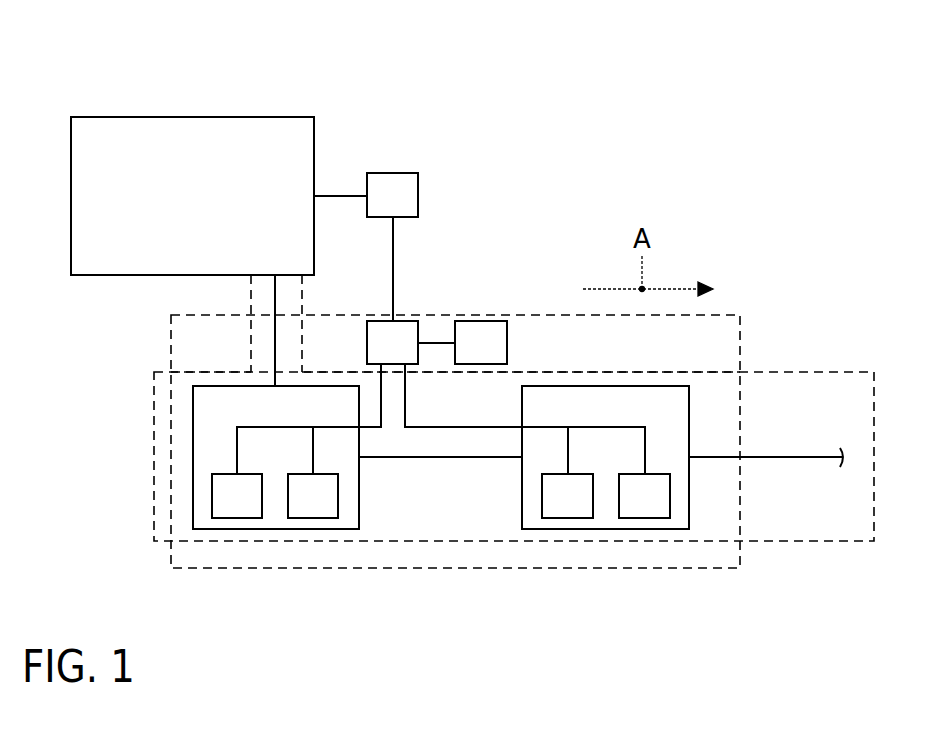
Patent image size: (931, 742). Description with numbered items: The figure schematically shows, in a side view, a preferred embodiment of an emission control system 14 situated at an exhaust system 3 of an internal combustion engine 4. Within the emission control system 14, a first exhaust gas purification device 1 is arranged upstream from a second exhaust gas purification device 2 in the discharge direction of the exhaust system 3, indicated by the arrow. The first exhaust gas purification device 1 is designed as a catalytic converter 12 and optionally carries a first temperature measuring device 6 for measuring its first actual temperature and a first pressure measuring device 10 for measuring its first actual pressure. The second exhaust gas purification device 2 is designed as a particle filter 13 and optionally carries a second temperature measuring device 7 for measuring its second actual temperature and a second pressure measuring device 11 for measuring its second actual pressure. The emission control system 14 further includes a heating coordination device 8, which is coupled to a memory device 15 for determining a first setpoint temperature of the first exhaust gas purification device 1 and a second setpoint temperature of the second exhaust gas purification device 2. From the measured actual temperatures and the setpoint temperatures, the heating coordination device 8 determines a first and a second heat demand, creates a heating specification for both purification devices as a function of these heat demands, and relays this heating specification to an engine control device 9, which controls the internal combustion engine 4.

The first exhaust gas purification device 1 is at (193, 457).
The catalytic converter 12 is at (276, 457).
The second exhaust gas purification device 2 is at (522, 529).
The particle filter 13 is at (605, 457).
The exhaust system 3 is at (154, 416).
The internal combustion engine 4 is at (178, 117).
The first temperature measuring device 6 is at (235, 518).
The second temperature measuring device 7 is at (567, 518).
The heating coordination device 8 is at (405, 332).
The engine control device 9 is at (393, 173).
The first pressure measuring device 10 is at (313, 518).
The second pressure measuring device 11 is at (645, 518).
The emission control system 14 is at (171, 344).
The memory device 15 is at (492, 332).